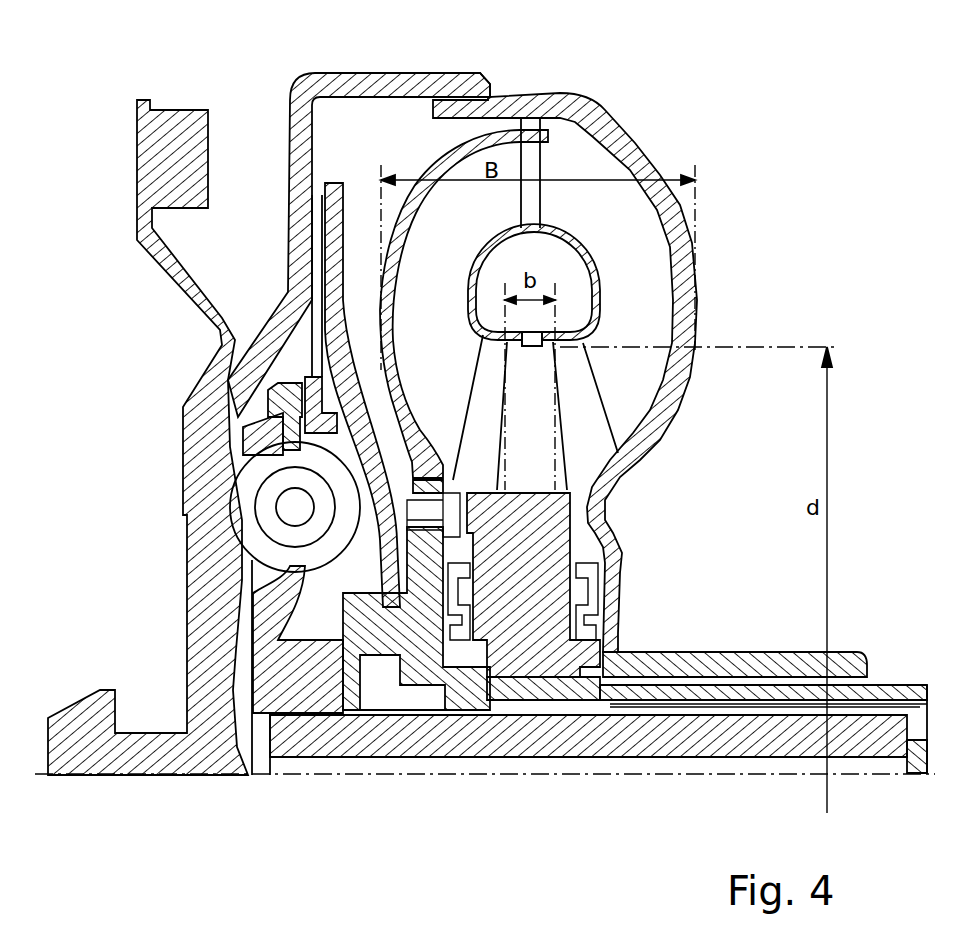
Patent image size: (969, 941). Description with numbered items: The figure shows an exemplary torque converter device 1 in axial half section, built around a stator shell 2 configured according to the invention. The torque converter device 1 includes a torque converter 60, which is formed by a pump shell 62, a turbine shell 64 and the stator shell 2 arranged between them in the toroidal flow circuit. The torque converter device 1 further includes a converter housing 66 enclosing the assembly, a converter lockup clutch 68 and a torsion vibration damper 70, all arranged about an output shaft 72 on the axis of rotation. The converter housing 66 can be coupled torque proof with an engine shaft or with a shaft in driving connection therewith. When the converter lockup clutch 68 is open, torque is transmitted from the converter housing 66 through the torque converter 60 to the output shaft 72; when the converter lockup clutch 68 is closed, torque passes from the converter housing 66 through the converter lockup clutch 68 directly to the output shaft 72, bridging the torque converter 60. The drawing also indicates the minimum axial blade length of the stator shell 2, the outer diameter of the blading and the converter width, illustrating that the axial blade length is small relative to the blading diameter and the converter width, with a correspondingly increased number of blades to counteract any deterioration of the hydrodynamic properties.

The torque converter device 1 is at (535, 78).
The stator shell 2 is at (567, 422).
The torque converter 60 is at (612, 140).
The pump shell 62 is at (649, 281).
The turbine shell 64 is at (452, 281).
The converter housing 66 is at (375, 80).
The converter lockup clutch 68 is at (275, 233).
The torsion vibration damper 70 is at (245, 552).
The output shaft 72 is at (628, 737).